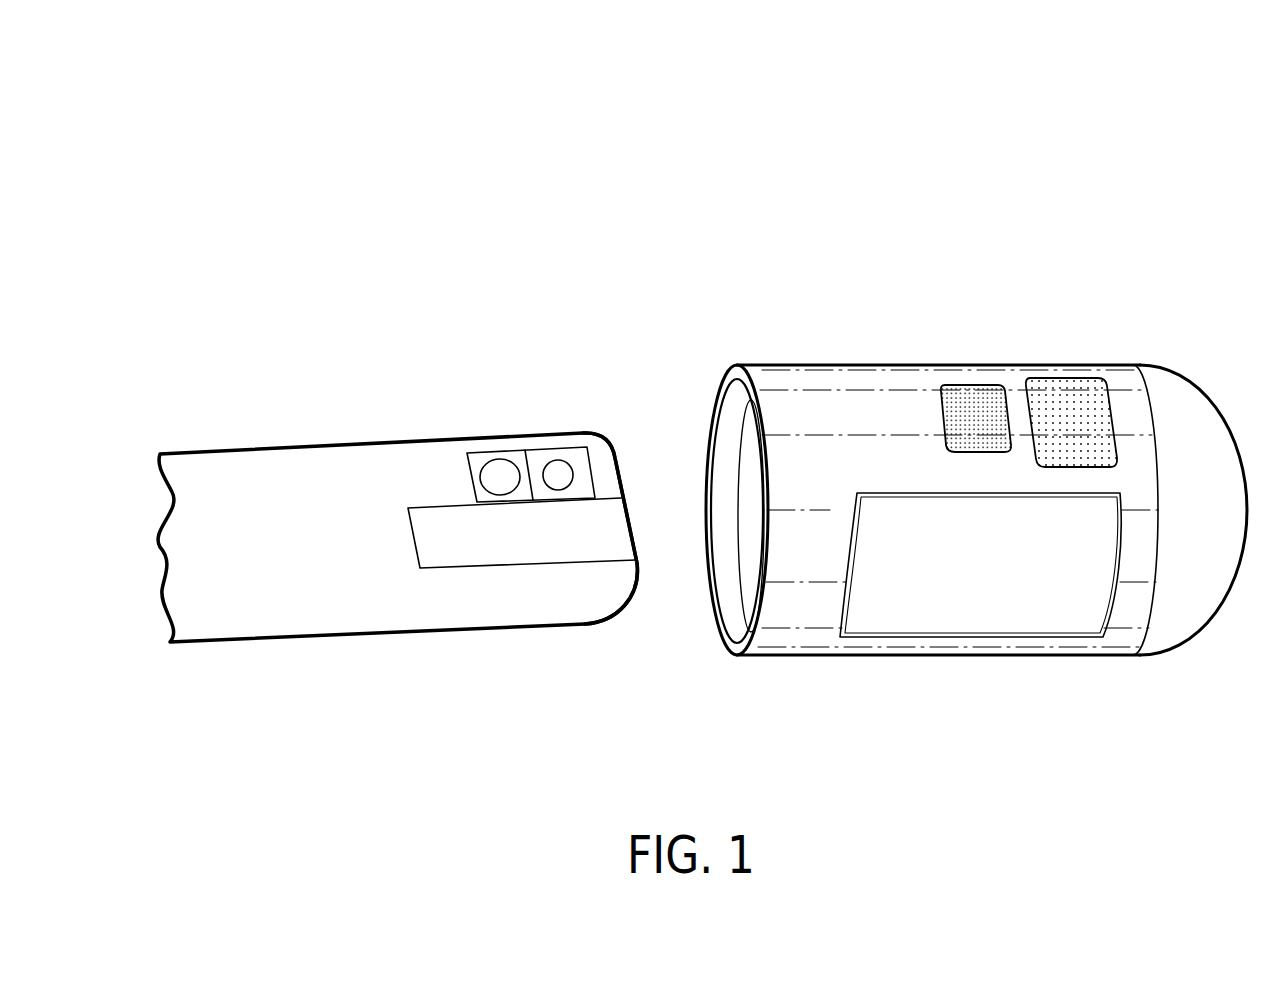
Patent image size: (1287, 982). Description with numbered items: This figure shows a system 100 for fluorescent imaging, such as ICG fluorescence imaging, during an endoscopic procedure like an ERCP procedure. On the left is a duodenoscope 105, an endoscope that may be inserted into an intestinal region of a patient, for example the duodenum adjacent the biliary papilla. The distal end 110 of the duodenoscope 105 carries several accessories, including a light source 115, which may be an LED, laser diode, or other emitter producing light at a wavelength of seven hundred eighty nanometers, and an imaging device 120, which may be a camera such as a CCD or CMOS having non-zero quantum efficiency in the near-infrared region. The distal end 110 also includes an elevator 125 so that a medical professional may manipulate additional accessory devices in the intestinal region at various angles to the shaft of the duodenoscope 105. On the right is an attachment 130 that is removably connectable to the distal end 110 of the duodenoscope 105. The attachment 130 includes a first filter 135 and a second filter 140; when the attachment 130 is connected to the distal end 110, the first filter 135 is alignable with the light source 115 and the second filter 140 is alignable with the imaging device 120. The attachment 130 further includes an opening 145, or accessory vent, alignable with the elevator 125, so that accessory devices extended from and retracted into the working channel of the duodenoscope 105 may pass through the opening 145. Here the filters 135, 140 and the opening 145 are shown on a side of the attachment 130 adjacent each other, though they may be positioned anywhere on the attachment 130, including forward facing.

The system 100 is at (1167, 160).
The duodenoscope 105 is at (293, 390).
The distal end 110 is at (556, 650).
The light source 115 is at (562, 415).
The imaging device 120 is at (490, 415).
The elevator 125 is at (672, 572).
The attachment 130 is at (908, 255).
The first filter 135 is at (1072, 390).
The second filter 140 is at (970, 395).
The opening 145 is at (1032, 615).